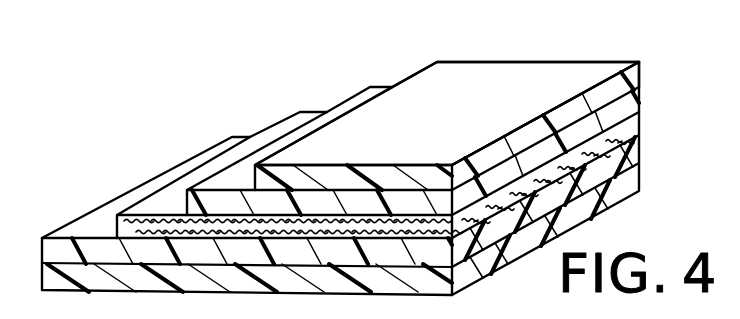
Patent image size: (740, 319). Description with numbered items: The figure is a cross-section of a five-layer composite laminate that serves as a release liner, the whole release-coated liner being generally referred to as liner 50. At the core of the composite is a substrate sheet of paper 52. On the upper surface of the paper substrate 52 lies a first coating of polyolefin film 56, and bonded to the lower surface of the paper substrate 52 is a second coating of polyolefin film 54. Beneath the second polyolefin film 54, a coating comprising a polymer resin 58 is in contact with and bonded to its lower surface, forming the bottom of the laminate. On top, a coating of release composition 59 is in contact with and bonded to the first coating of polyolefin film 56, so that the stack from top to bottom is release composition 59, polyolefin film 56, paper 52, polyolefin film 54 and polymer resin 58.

The release-coated liner 50 is at (562, 73).
The coating of release composition 59 is at (631, 82).
The first coating of polyolefin film 56 is at (641, 103).
The substrate sheet of paper 52 is at (642, 134).
The second coating of polyolefin film 54 is at (643, 152).
The coating comprising a polymer resin 58 is at (643, 188).